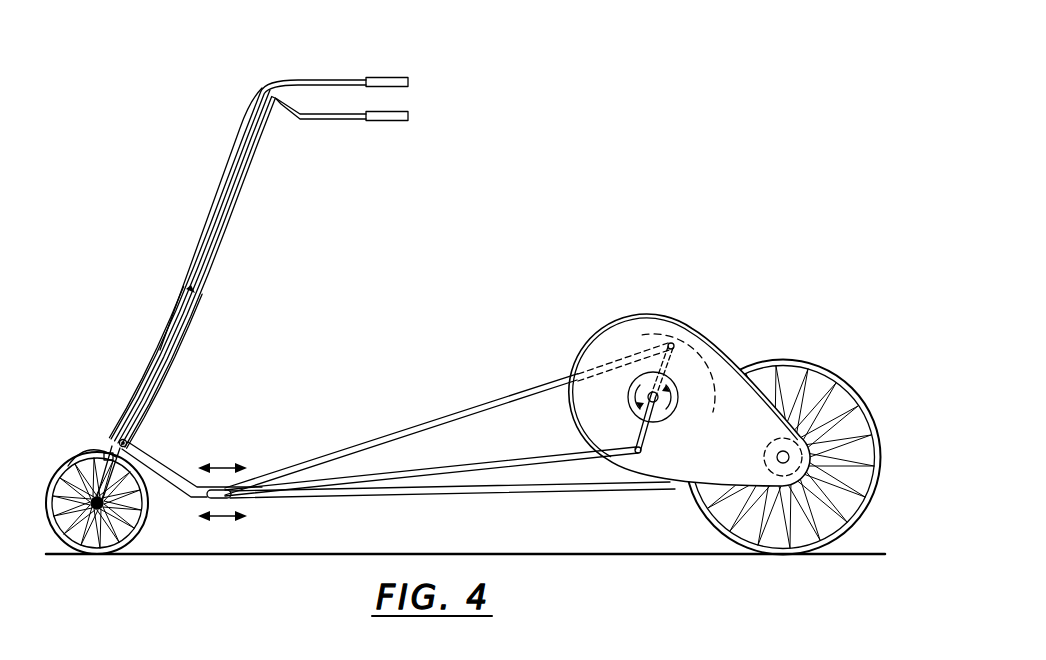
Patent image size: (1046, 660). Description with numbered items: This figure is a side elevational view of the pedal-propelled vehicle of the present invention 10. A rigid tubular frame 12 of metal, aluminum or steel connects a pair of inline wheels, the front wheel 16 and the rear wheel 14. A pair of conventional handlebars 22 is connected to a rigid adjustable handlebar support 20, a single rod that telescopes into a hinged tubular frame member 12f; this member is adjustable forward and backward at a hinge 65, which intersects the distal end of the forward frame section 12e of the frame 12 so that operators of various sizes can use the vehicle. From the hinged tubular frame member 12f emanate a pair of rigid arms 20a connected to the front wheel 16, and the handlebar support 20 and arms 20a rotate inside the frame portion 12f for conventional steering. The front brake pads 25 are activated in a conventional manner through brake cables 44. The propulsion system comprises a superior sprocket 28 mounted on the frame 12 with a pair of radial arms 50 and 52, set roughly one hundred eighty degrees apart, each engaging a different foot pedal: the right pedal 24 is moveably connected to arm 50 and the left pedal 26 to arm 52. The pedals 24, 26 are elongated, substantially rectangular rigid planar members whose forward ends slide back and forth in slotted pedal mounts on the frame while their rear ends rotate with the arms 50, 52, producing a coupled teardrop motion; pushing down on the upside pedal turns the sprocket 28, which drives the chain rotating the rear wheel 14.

The present invention 10 is at (560, 226).
The frame 12 is at (526, 499).
The forward frame section 12e is at (171, 469).
The hinged tubular frame member 12f is at (197, 313).
The rear wheel 14 is at (838, 376).
The front wheel 16 is at (92, 450).
The handlebar support 20 is at (206, 241).
The rigid arms 20a is at (109, 440).
The handlebars 22 is at (326, 79).
The right pedal 24 is at (519, 392).
The front brake pads 25 is at (77, 463).
The left pedal 26 is at (545, 456).
The sprocket 28 is at (647, 374).
The brake cables 44 is at (248, 128).
The arm 50 is at (680, 349).
The arm 52 is at (642, 330).
The hinge 65 is at (128, 444).